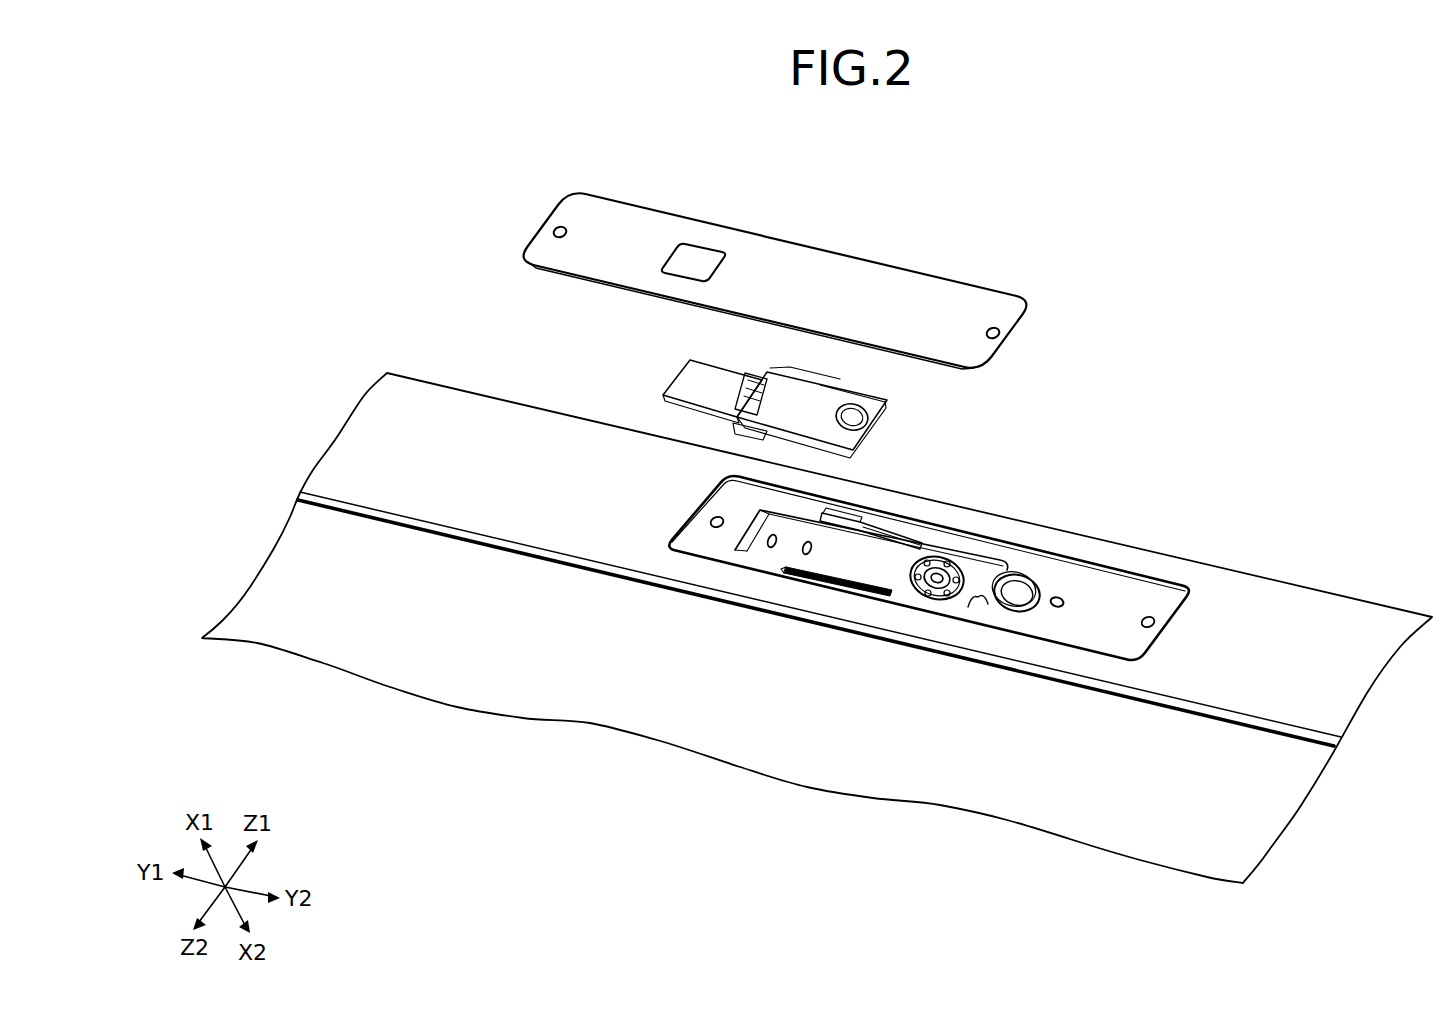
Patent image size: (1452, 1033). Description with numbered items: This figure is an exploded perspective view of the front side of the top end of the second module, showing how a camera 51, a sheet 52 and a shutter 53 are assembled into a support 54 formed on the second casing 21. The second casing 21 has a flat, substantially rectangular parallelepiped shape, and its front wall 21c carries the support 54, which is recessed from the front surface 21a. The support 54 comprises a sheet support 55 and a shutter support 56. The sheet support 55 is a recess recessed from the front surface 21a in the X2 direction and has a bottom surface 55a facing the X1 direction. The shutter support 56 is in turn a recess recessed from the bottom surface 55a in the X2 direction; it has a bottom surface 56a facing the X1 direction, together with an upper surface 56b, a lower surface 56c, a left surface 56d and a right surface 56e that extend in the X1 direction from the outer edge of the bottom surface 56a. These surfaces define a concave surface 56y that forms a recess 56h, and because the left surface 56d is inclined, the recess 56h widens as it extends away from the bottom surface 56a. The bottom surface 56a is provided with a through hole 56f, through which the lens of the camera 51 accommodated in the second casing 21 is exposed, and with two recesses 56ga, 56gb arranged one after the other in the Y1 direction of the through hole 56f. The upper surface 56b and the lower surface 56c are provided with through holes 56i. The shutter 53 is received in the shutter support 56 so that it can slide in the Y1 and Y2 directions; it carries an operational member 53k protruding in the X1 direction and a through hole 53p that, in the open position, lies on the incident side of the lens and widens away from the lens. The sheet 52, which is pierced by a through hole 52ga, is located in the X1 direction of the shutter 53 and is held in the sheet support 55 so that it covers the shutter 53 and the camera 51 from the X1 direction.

The second casing 21 is at (817, 628).
The front surface 21a is at (817, 628).
The front wall 21c is at (1305, 608).
The sheet 52 is at (775, 251).
The through hole 52ga is at (692, 262).
The shutter 53 is at (781, 392).
The operational member 53k is at (753, 382).
The through hole 53p is at (855, 417).
The support 54 is at (806, 619).
The sheet support 55 is at (806, 619).
The bottom surface 55a is at (1107, 587).
The shutter support 56 is at (819, 607).
The bottom surface 56a is at (819, 607).
The concave surface 56y is at (819, 607).
The upper surface 56b is at (1027, 675).
The lower surface 56c is at (975, 603).
The left surface 56d is at (693, 503).
The right surface 56e is at (987, 615).
The through hole 56f is at (944, 667).
The recess 56ga is at (807, 554).
The recess 56gb is at (772, 547).
The recess 56h is at (892, 580).
The through holes 56i is at (863, 513).
The camera 51 is at (958, 557).